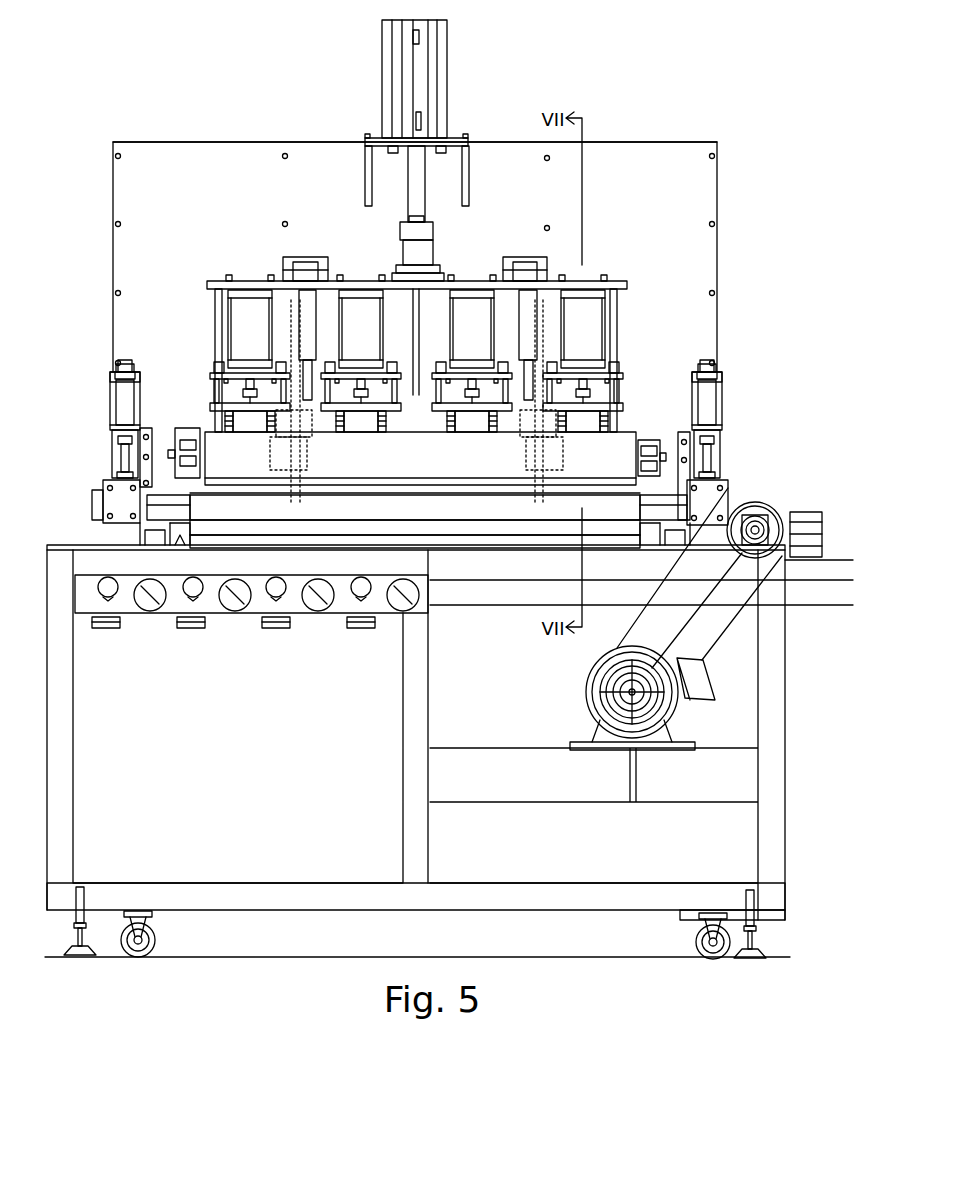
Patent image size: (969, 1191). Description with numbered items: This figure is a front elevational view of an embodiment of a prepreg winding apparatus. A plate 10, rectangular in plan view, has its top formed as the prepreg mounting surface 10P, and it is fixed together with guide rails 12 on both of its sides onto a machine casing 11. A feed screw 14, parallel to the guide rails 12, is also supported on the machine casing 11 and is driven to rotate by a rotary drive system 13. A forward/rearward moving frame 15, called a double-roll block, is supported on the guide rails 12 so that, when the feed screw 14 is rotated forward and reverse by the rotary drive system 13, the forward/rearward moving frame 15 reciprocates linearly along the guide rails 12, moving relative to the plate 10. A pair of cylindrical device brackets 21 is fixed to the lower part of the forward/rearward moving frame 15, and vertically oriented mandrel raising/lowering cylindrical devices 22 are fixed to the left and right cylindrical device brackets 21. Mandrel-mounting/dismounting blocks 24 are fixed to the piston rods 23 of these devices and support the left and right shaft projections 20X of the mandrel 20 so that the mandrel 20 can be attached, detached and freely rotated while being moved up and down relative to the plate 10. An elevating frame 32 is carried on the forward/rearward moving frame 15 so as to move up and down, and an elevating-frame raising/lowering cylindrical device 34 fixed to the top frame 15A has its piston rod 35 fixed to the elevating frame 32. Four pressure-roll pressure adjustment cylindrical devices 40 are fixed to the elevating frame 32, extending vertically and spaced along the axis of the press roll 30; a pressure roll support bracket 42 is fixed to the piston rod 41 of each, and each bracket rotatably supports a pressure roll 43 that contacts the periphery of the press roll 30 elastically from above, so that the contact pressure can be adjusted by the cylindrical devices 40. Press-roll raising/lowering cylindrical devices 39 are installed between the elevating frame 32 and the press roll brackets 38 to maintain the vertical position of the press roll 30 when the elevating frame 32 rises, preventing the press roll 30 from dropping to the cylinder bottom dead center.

The plate 10 is at (375, 528).
The prepreg mounting surface 10P is at (337, 518).
The machine casing 11 is at (280, 546).
The guide rails 12 is at (155, 545).
The rotary drive system 13 is at (705, 660).
The feed screw 14 is at (762, 505).
The forward/rearward moving frame 15 is at (708, 247).
The top frame 15A is at (705, 140).
The mandrel 20 is at (235, 507).
The shaft projections 20X is at (171, 504).
The cylindrical device brackets 21 is at (137, 370).
The mandrel raising/lowering cylindrical devices 22 is at (120, 403).
The piston rods 23 is at (122, 461).
The mandrel-mounting/dismounting blocks 24 is at (180, 530).
The press roll 30 is at (425, 470).
The elevating frame 32 is at (609, 282).
The elevating-frame raising/lowering cylindrical device 34 is at (440, 68).
The piston rod 35 is at (420, 210).
The press roll brackets 38 is at (178, 438).
The press-roll raising/lowering cylindrical devices 39 is at (306, 312).
The pressure-roll pressure adjustment cylindrical devices 40 is at (246, 331).
The piston rod 41 is at (262, 378).
The pressure roll support bracket 42 is at (226, 424).
The pressure roll 43 is at (250, 418).